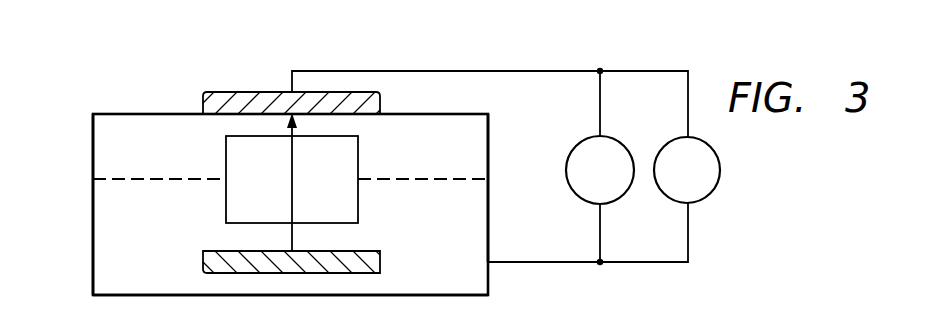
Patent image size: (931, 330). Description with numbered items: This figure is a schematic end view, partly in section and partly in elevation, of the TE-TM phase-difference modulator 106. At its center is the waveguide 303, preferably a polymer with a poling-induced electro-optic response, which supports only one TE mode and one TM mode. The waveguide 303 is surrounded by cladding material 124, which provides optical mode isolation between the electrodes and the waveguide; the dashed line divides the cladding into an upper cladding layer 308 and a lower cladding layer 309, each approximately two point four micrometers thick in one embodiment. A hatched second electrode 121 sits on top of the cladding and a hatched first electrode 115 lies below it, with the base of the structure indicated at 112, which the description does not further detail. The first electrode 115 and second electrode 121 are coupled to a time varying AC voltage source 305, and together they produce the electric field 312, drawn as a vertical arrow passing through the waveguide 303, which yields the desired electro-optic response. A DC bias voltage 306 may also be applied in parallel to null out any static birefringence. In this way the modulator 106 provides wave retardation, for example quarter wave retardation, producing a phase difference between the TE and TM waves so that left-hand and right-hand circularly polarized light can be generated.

The TE-TM phase-difference modulator 106 is at (143, 88).
The second electrode 121 is at (243, 92).
The cladding material 124 is at (93, 145).
The upper chamber region 308 is at (488, 147).
The lower cladding layer 309 is at (488, 215).
The chamber bottom wall 112 is at (488, 283).
The first electrode 115 is at (380, 252).
The waveguide 303 is at (358, 198).
The electric field 312 is at (292, 190).
The AC voltage source 305 is at (622, 144).
The DC bias voltage 306 is at (720, 170).